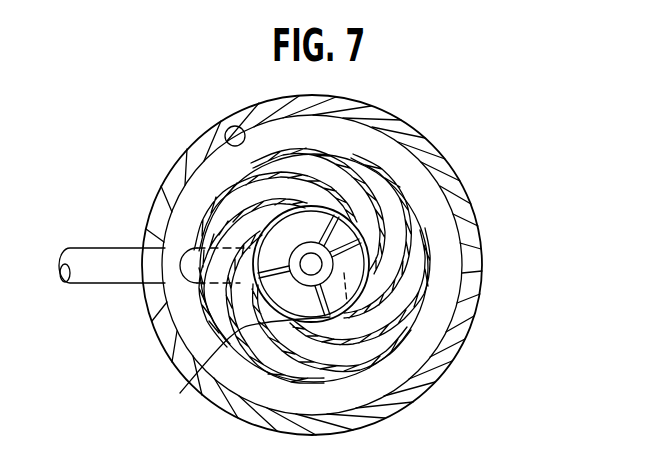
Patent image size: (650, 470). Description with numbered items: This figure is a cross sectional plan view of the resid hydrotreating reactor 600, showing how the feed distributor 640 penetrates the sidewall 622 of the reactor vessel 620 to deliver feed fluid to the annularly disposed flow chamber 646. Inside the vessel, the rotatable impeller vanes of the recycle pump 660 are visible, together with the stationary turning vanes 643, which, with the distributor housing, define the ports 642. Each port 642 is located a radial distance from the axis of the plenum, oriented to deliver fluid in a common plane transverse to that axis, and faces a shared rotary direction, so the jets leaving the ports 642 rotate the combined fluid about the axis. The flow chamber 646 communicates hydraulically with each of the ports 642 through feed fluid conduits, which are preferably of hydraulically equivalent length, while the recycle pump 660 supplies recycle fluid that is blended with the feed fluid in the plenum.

The pump assembly 600 is at (492, 166).
The reactor vessel 620 is at (166, 166).
The sidewall 622 is at (232, 127).
The feed distributor 640 is at (106, 298).
The port 642 is at (428, 236).
The stationary turning vanes 643 is at (425, 290).
The flow chamber 646 is at (420, 343).
The recycle pump 660 is at (192, 376).